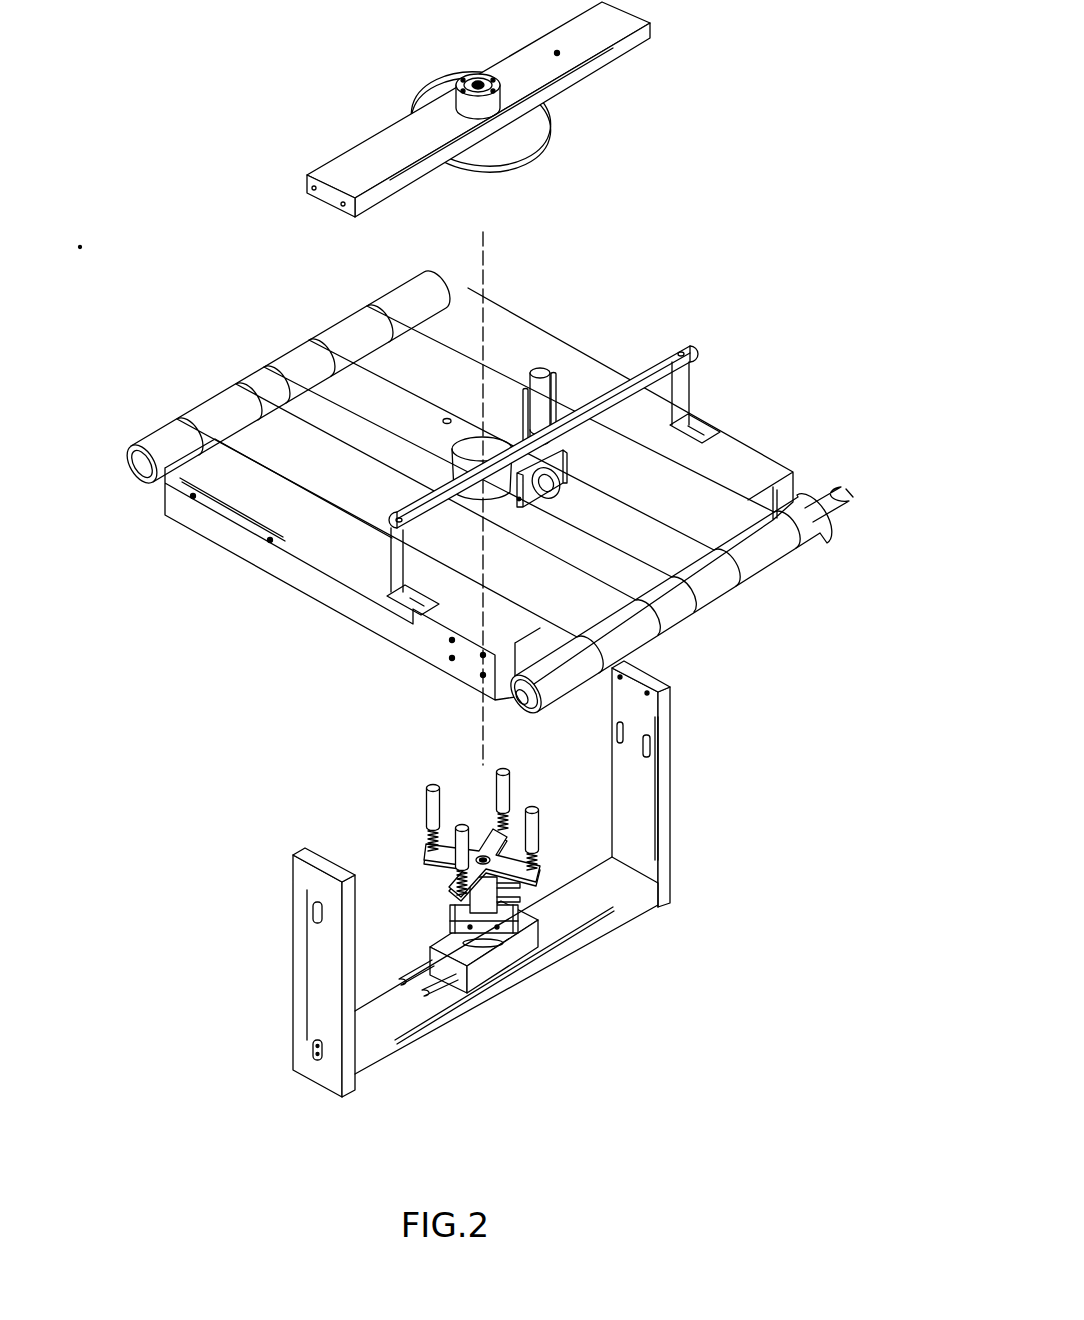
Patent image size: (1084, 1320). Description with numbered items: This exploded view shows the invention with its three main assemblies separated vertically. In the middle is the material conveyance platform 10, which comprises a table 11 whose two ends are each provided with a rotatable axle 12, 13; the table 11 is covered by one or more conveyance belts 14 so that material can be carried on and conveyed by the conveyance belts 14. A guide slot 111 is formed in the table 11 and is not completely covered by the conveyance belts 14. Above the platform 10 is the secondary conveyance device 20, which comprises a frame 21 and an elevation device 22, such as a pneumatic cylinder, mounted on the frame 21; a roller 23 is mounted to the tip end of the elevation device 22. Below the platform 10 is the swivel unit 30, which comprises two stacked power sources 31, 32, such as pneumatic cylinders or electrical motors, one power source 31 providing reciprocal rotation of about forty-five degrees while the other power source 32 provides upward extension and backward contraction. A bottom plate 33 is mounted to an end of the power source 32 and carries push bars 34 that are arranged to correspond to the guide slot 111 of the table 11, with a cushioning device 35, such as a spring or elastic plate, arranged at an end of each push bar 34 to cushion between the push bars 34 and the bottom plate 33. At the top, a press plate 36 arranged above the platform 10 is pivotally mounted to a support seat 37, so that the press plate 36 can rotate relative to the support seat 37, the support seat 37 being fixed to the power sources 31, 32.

The material conveyance platform 10 is at (510, 472).
The table 11 is at (755, 470).
The rotatable axle 12 is at (808, 525).
The rotatable axle 13 is at (157, 437).
The conveyance belts 14 is at (360, 320).
The guide slots 111 is at (493, 440).
The secondary conveyance device 20 is at (568, 502).
The frame 21 is at (688, 347).
The elevation device 22 is at (540, 375).
The roller 23 is at (548, 505).
The swivel unit 30 is at (449, 867).
The power source 31 is at (487, 966).
The power source 32 is at (470, 905).
The bottom plate 33 is at (490, 842).
The push bars 34 is at (427, 792).
The cushioning device 35 is at (432, 846).
The press plate 36 is at (528, 148).
The support seat 37 is at (360, 165).